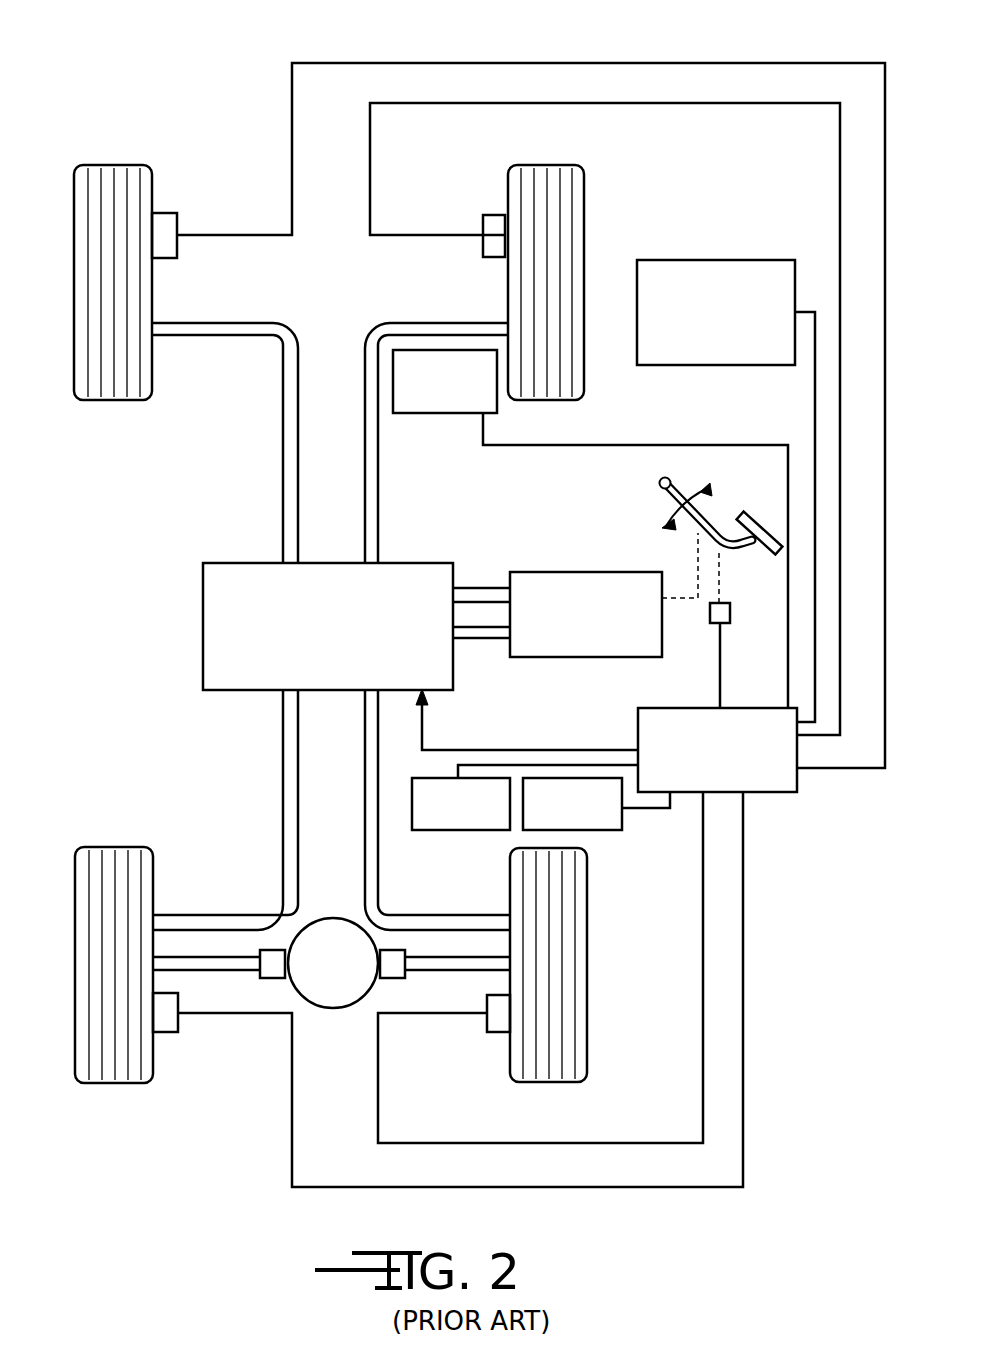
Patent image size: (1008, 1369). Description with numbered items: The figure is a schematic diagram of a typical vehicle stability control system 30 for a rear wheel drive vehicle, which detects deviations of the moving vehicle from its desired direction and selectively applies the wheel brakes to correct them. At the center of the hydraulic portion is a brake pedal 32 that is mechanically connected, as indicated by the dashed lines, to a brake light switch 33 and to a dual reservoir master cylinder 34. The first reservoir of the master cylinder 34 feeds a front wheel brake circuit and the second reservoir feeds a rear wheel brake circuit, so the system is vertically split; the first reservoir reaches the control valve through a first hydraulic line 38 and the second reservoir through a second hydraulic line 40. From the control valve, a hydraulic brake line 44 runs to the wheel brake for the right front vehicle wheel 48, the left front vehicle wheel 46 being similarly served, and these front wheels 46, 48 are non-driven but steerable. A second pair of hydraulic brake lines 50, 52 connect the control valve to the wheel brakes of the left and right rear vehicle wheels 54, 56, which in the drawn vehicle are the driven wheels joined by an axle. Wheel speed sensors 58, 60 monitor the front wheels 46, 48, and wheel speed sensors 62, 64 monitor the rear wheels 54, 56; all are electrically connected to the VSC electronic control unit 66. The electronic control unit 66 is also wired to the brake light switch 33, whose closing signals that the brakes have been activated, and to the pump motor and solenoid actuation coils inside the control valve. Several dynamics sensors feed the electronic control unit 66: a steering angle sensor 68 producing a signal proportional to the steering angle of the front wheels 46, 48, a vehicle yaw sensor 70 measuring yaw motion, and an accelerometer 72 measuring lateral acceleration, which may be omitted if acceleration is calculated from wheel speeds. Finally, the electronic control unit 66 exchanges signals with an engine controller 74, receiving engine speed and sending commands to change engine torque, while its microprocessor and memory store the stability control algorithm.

The vehicle stability control system 30 is at (348, 50).
The brake pedal 32 is at (722, 518).
The brake light switch 33 is at (730, 610).
The dual reservoir master cylinder 34 is at (600, 572).
The first hydraulic line 38 is at (203, 608).
The second hydraulic line 40 is at (490, 638).
The hydraulic brake line 44 is at (378, 430).
The left front vehicle wheel 46 is at (117, 165).
The right front vehicle wheel 48 is at (584, 196).
The hydraulic brake line 50 is at (283, 758).
The hydraulic brake line 52 is at (385, 805).
The left rear vehicle wheel 54 is at (112, 847).
The right rear vehicle wheel 56 is at (587, 870).
The wheel speed sensor 58 is at (178, 222).
The wheel speed sensor 60 is at (493, 215).
The wheel speed sensor 62 is at (165, 1032).
The wheel speed sensor 64 is at (500, 1032).
The VSC electronic control unit 66 is at (765, 792).
The steering angle sensor 68 is at (497, 405).
The vehicle yaw sensor 70 is at (480, 830).
The accelerometer 72 is at (607, 830).
The engine controller 74 is at (730, 260).